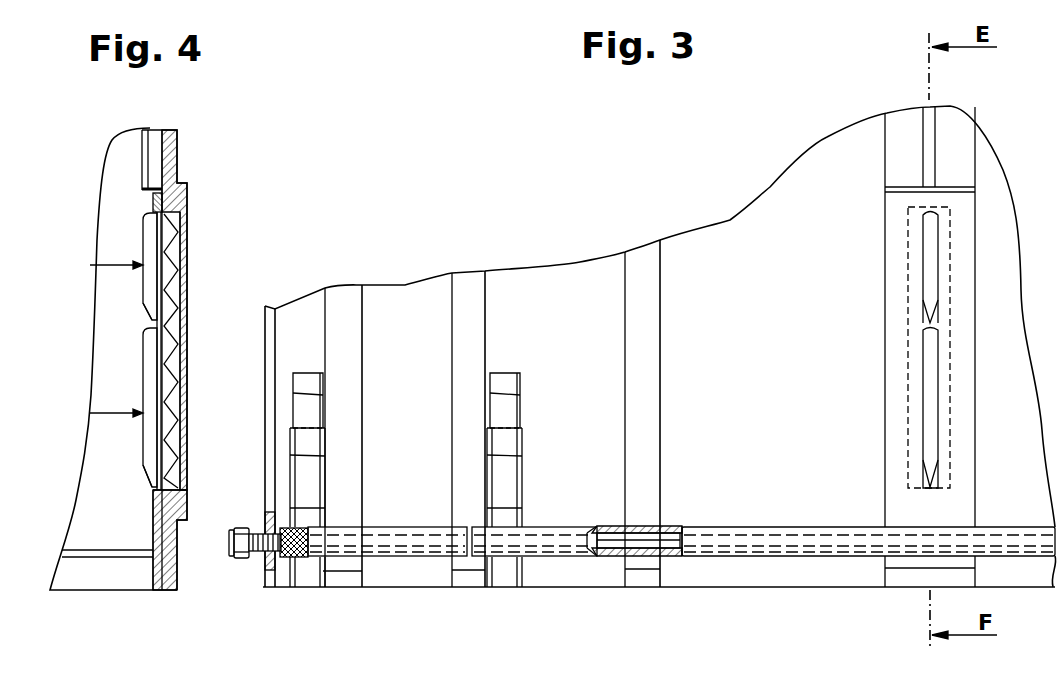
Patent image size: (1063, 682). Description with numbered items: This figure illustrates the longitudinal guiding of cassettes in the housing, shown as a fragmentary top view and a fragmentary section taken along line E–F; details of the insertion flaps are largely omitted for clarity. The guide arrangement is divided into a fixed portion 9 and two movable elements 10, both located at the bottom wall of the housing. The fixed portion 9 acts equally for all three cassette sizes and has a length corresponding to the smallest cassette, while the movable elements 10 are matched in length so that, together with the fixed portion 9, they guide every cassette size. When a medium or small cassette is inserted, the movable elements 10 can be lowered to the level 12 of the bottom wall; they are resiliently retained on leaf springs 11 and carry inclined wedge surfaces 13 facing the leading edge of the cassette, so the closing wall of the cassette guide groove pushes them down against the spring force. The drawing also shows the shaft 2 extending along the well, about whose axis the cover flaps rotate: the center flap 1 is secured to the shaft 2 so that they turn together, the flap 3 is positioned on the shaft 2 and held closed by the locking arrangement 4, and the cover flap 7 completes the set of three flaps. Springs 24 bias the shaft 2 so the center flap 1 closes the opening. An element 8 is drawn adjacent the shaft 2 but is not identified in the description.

In FIG. 3, the center flap 1 is at (675, 553).
In FIG. 3, the shaft 2 is at (645, 540).
In FIG. 3, the flap 3 is at (564, 548).
In FIG. 3, the locking arrangement 4 is at (345, 578).
In FIG. 3, the cover flap 7 is at (405, 548).
In FIG. 3, the compression spring 8 is at (300, 562).
In FIG. 4, the fixed portion of the guide arrangement 9 is at (145, 150).
In FIG. 3, the fixed portion of the guide arrangement 9 is at (930, 153).
In FIG. 4, the movable elements 10 is at (148, 243).
In FIG. 3, the movable elements 10 is at (932, 265).
In FIG. 4, the leaf springs 11 is at (172, 226).
In FIG. 4, the level of the bottom wall 12 is at (152, 203).
In FIG. 3, the level of the bottom wall 12 is at (965, 479).
In FIG. 4, the inclined wedge surfaces 13 is at (150, 313).
In FIG. 3, the springs 24 is at (243, 562).